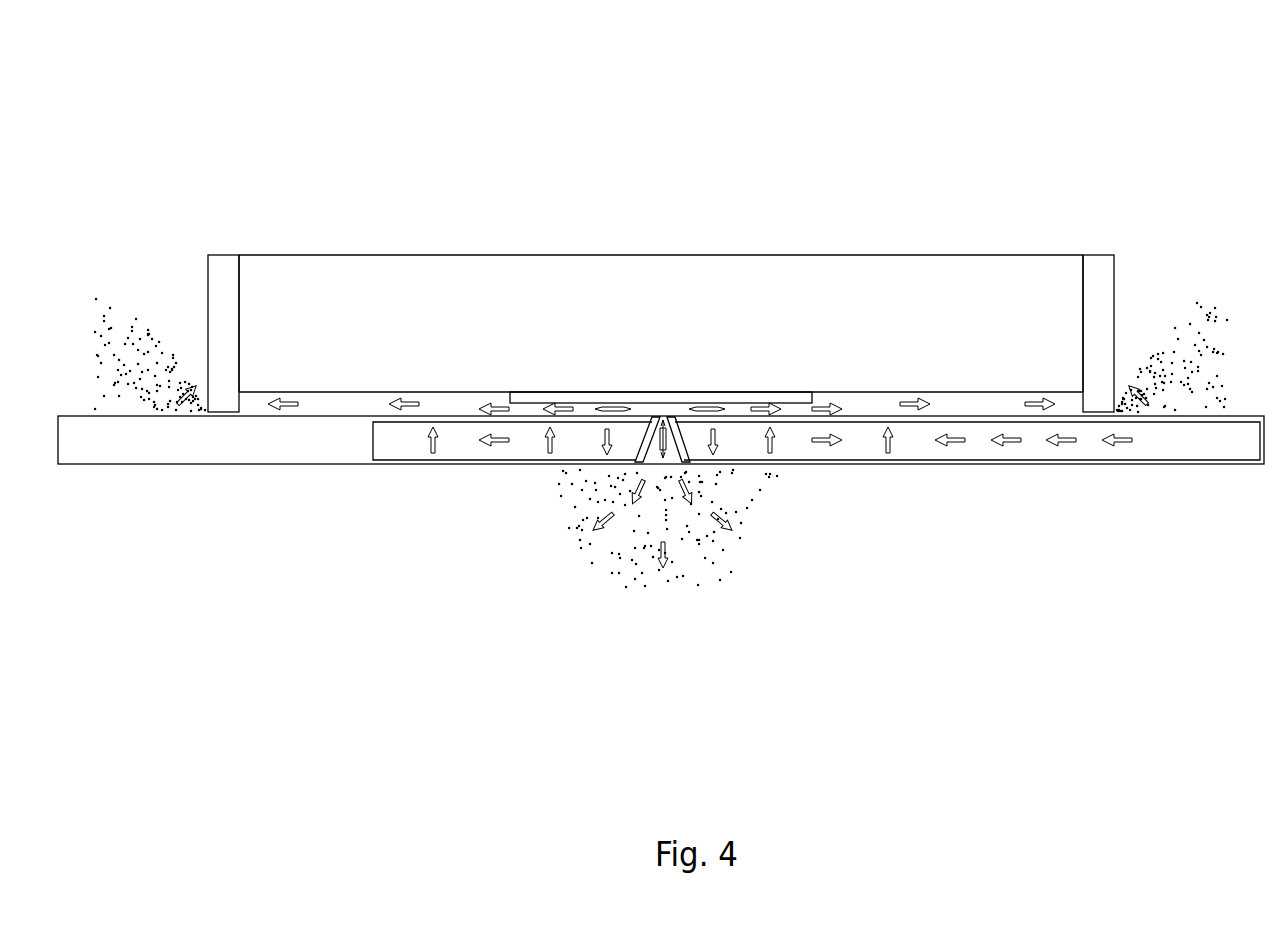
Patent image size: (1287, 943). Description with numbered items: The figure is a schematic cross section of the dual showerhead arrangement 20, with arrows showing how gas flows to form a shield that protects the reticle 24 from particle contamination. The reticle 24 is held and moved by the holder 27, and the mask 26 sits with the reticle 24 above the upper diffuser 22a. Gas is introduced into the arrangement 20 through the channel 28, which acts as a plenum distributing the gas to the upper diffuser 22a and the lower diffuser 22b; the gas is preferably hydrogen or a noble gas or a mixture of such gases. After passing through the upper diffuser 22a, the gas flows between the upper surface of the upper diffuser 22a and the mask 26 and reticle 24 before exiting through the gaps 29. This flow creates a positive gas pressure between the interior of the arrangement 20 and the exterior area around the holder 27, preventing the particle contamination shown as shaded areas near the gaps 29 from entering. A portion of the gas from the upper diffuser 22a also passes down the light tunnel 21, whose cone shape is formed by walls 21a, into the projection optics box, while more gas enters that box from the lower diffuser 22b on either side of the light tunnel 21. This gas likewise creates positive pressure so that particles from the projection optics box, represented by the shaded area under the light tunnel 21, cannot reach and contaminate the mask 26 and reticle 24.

The arrangement 20 is at (225, 100).
The light tunnel 21 is at (663, 463).
The walls 21a is at (655, 463).
The upper diffuser 22a is at (408, 422).
The lower diffuser 22b is at (605, 465).
The reticle 24 is at (496, 280).
The mask 26 is at (663, 392).
The holder 27 is at (223, 270).
The channel 28 is at (1142, 440).
The gap 29 is at (208, 412).